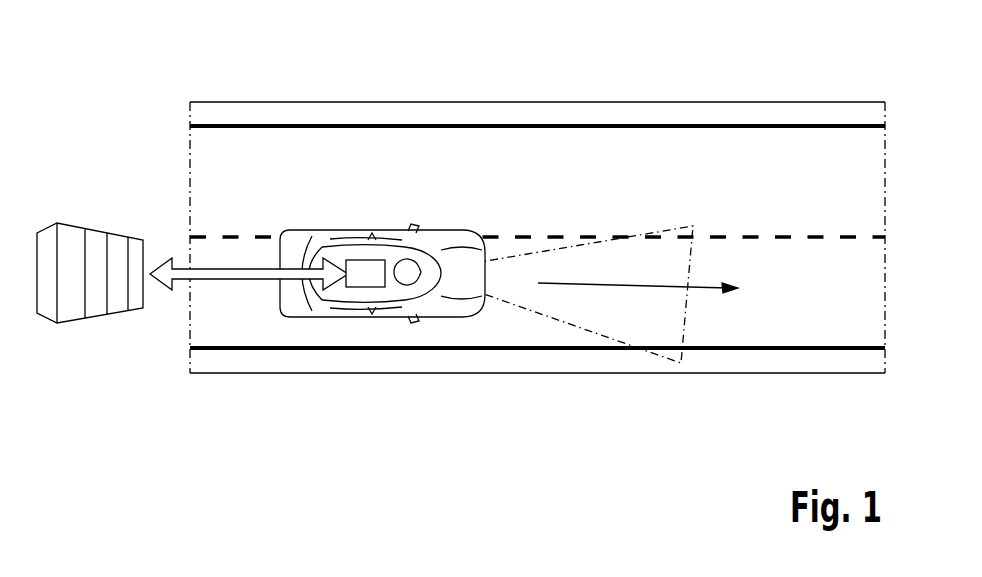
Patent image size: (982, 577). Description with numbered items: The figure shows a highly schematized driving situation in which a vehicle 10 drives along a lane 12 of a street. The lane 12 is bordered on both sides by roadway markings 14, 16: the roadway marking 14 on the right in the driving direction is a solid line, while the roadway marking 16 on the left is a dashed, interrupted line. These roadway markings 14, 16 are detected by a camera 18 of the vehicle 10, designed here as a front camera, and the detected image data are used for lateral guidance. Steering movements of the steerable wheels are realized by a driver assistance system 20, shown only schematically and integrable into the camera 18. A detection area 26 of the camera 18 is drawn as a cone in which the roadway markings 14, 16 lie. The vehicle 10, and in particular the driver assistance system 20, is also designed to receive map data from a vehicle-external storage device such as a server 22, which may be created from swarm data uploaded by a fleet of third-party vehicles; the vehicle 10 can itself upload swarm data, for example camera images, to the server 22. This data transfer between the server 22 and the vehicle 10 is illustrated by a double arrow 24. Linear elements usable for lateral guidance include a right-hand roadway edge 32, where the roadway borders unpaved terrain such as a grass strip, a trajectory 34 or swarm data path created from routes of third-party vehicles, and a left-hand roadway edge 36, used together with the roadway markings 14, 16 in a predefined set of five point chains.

The vehicle 10 is at (443, 322).
The lane 12 is at (780, 313).
The roadway marking 14 is at (798, 350).
The roadway marking 16 is at (773, 237).
The camera 18 is at (407, 278).
The driver assistance system 20 is at (362, 277).
The server 22 is at (97, 307).
The double arrow 24 is at (215, 272).
The detection area 26 is at (587, 310).
The right-hand roadway edge 32 is at (712, 373).
The trajectory 34 is at (593, 283).
The left-hand roadway edge 36 is at (487, 102).